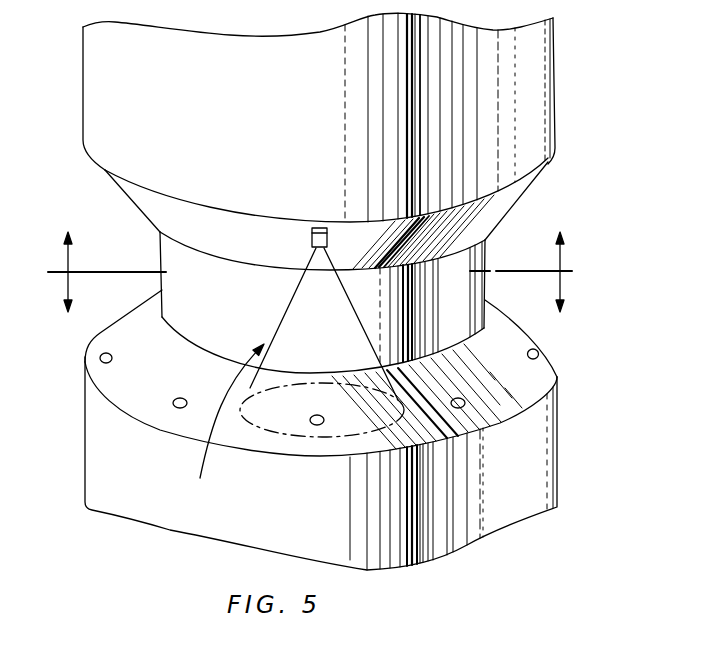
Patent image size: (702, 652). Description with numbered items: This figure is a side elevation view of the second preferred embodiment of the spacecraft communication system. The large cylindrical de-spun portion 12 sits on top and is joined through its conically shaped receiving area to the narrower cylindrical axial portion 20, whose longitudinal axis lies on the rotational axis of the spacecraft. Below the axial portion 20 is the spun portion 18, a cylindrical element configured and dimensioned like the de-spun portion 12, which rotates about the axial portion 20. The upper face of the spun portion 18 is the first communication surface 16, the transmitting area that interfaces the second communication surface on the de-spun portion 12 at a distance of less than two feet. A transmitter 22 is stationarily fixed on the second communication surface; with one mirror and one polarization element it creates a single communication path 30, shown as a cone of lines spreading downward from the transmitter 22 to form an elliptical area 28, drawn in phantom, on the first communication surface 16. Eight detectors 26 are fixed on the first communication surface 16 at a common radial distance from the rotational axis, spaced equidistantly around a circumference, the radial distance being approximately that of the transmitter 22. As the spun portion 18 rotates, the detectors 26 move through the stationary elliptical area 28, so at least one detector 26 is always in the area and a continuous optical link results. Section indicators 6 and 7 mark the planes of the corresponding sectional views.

The de-spun portion 12 is at (538, 93).
The axial portion 20 is at (473, 262).
The transmitter 22 is at (320, 228).
The first communication surface 16 is at (537, 380).
The spun portion 18 is at (540, 457).
The detector 26 is at (107, 366).
The elliptical area 28 is at (350, 428).
The communication path 30 is at (222, 427).
The section line 6- 6 is at (310, 251).
The section line 7- 7 is at (311, 323).